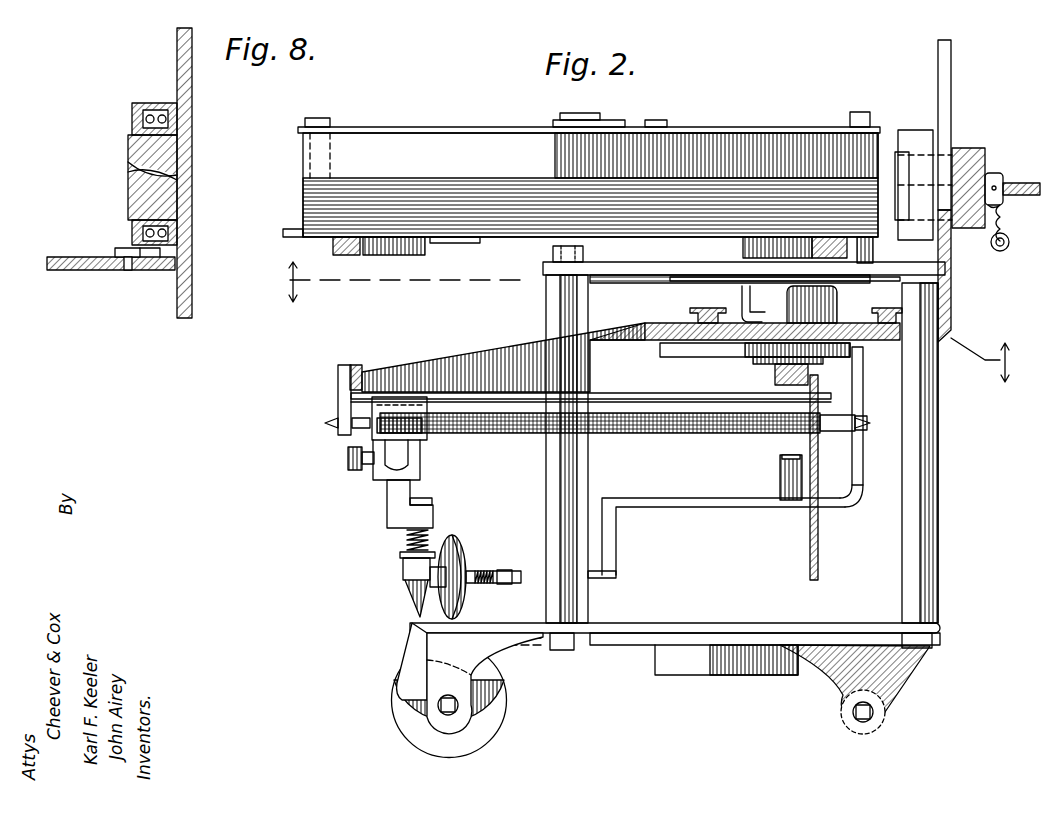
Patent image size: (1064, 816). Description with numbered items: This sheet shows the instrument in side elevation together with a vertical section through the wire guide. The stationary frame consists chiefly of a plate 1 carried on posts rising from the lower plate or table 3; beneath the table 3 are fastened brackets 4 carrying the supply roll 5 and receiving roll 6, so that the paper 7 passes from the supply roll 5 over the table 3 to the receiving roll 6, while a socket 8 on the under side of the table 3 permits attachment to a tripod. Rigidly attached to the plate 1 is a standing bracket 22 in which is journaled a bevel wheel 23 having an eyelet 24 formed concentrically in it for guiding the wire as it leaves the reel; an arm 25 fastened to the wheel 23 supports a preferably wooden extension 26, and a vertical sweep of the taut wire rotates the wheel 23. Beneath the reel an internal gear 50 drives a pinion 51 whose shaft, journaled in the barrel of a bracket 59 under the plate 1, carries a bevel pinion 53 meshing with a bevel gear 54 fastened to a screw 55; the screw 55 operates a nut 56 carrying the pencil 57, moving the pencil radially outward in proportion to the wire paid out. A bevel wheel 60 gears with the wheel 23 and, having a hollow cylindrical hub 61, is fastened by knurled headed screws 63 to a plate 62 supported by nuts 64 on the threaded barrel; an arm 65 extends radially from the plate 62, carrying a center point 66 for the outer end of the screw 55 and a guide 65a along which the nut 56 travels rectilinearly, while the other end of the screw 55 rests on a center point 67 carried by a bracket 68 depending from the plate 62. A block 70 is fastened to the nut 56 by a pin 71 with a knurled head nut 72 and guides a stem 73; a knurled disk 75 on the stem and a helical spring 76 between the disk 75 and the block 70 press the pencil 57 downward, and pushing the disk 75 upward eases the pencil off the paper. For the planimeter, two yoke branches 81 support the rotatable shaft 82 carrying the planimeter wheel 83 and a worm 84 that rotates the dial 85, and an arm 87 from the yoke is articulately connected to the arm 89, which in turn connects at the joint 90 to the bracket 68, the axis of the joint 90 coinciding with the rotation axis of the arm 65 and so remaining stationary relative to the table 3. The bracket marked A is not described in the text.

In FIG. 8, the plate 1 is at (94, 270).
In FIG. 2, the plate 1 is at (543, 268).
In FIG. 2, the lower plate or table 3 is at (612, 636).
In FIG. 2, the brackets 4 is at (512, 672).
In FIG. 2, the supply roll 5 is at (395, 692).
In FIG. 2, the receiving roll 6 is at (882, 712).
In FIG. 2, the paper 7 is at (405, 640).
In FIG. 2, the socket 8 is at (700, 668).
In FIG. 8, the standing bracket 22 is at (162, 103).
In FIG. 2, the standing bracket 22 is at (920, 132).
In FIG. 8, the bevel wheel 23 is at (187, 100).
In FIG. 2, the bevel wheel 23 is at (952, 96).
In FIG. 8, the eyelet 24 is at (128, 205).
In FIG. 2, the eyelet 24 is at (893, 160).
In FIG. 2, the arm 25 is at (982, 150).
In FIG. 2, the extension 26 is at (990, 175).
In FIG. 2, the internal gear 50 is at (490, 244).
In FIG. 2, the pinion 51 is at (800, 255).
In FIG. 2, the bevel pinion 53 is at (798, 386).
In FIG. 2, the bevel gear 54 is at (818, 402).
In FIG. 2, the screw 55 is at (700, 435).
In FIG. 2, the nut 56 is at (428, 436).
In FIG. 2, the pencil 57 is at (418, 617).
In FIG. 2, the bracket 59 is at (722, 283).
In FIG. 2, the bevel wheel 60 is at (668, 332).
In FIG. 2, the hollow cylindrical hub 61 is at (757, 300).
In FIG. 2, the plate 62 is at (735, 350).
In FIG. 2, the knurled headed screws 63 is at (690, 310).
In FIG. 2, the nuts 64 is at (863, 362).
In FIG. 2, the arm 65 is at (465, 368).
In FIG. 2, the guide 65a is at (465, 400).
In FIG. 2, the center point 66 is at (325, 424).
In FIG. 2, the center point 67 is at (868, 432).
In FIG. 2, the bracket 68 is at (855, 497).
In FIG. 2, the block 70 is at (387, 508).
In FIG. 2, the pin 71 is at (420, 470).
In FIG. 2, the knurled head nut 72 is at (350, 470).
In FIG. 2, the stem 73 is at (432, 501).
In FIG. 2, the knurled disk 75 is at (400, 555).
In FIG. 2, the helical spring 76 is at (430, 535).
In FIG. 2, the yoke branches 81 is at (410, 590).
In FIG. 2, the rotatable shaft 82 is at (468, 585).
In FIG. 2, the planimeter wheel 83 is at (465, 545).
In FIG. 2, the worm 84 is at (492, 584).
In FIG. 2, the dial 85 is at (495, 571).
In FIG. 2, the arm 87 is at (598, 578).
In FIG. 2, the arm 89 is at (681, 500).
In FIG. 2, the joint 90 is at (780, 462).
In FIG. 2, the bracket A is at (835, 682).